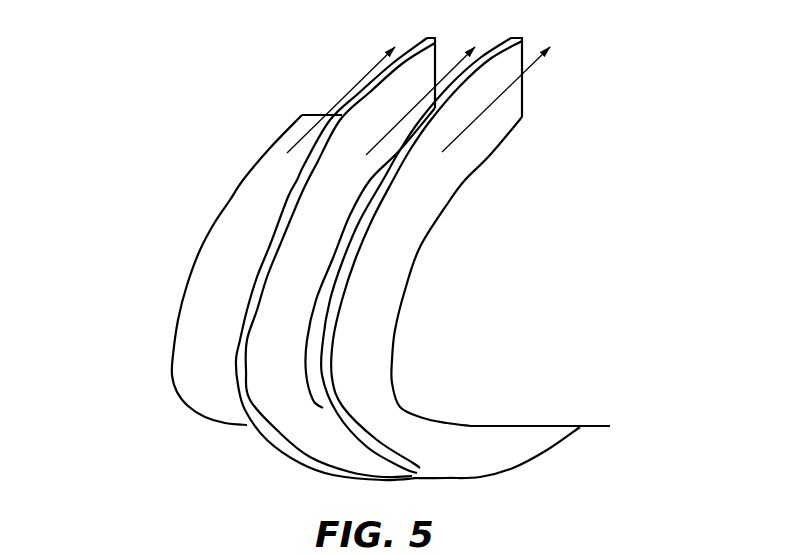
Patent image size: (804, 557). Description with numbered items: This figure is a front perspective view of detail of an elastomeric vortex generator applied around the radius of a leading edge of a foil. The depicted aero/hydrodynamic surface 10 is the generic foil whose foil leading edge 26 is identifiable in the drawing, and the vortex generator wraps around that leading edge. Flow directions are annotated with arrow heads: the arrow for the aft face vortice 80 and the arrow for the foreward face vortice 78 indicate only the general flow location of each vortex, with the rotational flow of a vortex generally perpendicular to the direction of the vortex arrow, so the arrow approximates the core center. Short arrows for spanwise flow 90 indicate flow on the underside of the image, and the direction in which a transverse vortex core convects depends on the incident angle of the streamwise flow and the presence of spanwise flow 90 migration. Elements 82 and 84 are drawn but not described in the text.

The aero/hydrodynamic surface 10 is at (593, 45).
The foil leading edge 26 is at (537, 367).
The foreward face vortice 78 is at (435, 255).
The aft face vortice 80 is at (518, 437).
The third ply 82 is at (355, 259).
The bend region 84 is at (418, 413).
The spanwise flow 90 is at (349, 40).